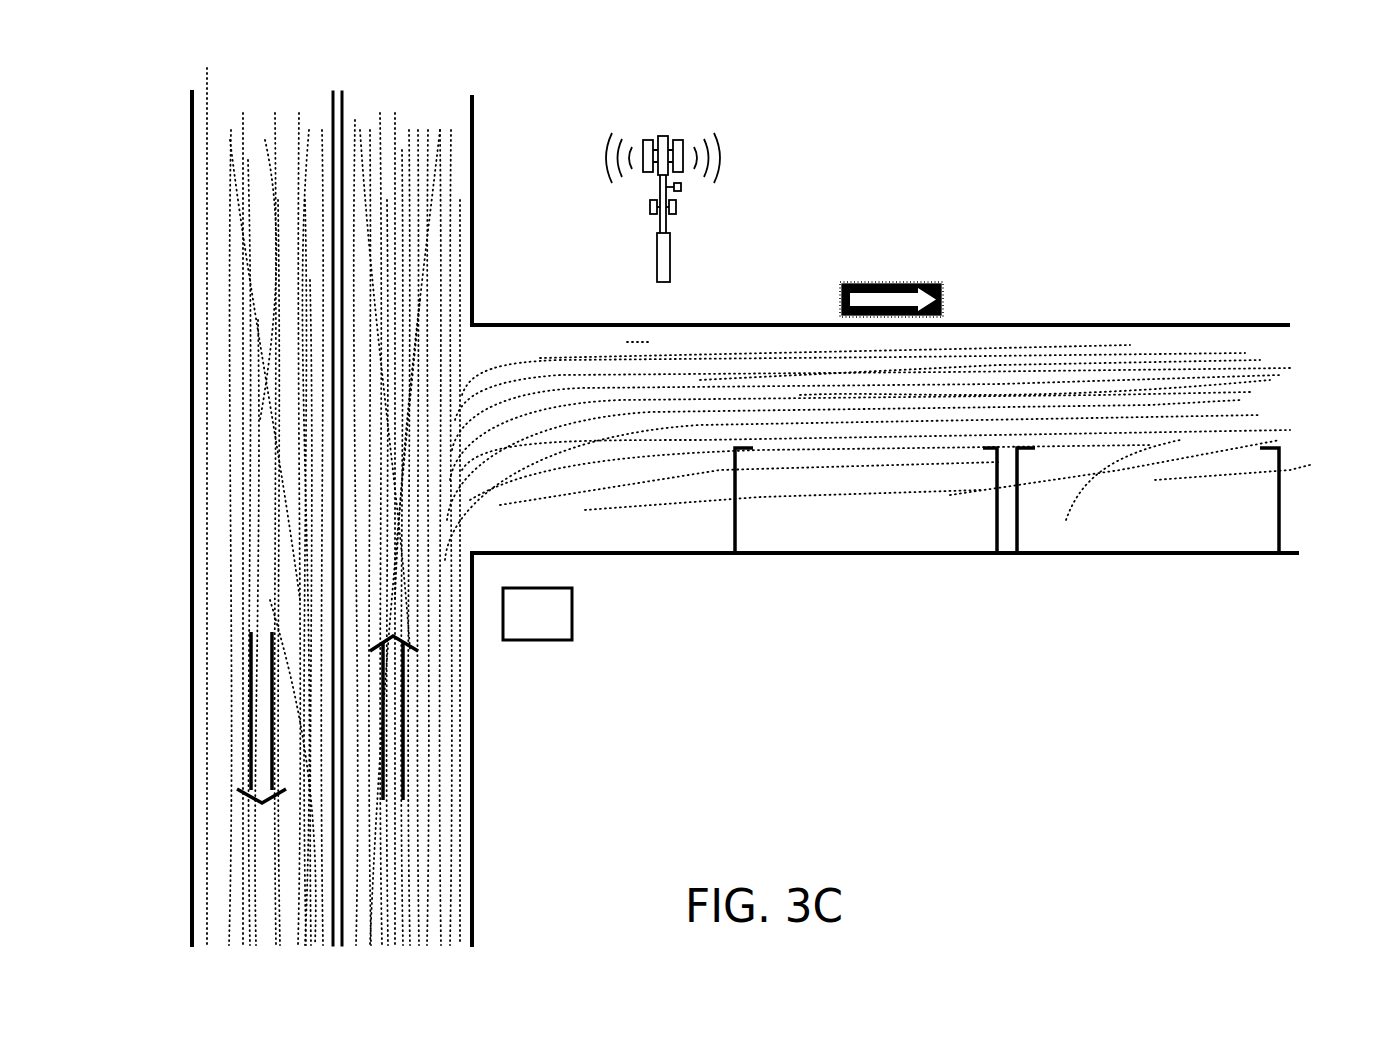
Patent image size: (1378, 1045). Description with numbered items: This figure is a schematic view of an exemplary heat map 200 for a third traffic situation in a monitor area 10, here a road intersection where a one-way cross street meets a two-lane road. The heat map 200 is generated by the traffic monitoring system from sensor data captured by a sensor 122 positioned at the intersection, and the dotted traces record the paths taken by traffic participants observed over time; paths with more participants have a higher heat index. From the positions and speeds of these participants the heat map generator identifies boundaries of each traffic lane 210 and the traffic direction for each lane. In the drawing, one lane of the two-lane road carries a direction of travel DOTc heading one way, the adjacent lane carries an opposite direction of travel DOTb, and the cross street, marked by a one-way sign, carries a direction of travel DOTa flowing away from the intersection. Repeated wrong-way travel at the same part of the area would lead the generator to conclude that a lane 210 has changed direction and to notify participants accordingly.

The heat map 200 is at (1000, 128).
The traffic lane 210 is at (335, 90).
The monitor area 10 is at (1024, 229).
The sensor 122 is at (572, 608).
The direction of travel DOTa is at (883, 283).
The direction of travel DOTb is at (392, 678).
The direction of travel DOTc is at (258, 738).